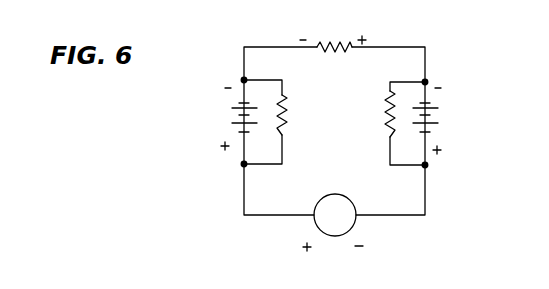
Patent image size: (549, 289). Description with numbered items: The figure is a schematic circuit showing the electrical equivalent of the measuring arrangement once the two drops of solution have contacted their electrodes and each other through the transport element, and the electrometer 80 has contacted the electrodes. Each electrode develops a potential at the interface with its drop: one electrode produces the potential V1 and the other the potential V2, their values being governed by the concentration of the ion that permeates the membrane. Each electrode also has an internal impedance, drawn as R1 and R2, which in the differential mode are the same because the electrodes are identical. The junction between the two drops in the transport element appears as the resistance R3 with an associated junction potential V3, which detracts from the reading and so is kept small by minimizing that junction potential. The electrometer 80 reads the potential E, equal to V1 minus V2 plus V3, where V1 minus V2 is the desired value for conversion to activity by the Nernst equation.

The electrometer 80 is at (344, 222).
The internal impedance of first electrode R1 is at (294, 115).
The internal impedance of second electrode R2 is at (372, 114).
The junction resistance of transport element R3 is at (334, 58).
The potential of first electrode V1 is at (224, 119).
The potential of second electrode V2 is at (440, 121).
The junction potential V3 is at (333, 31).
The measured potential E is at (333, 250).